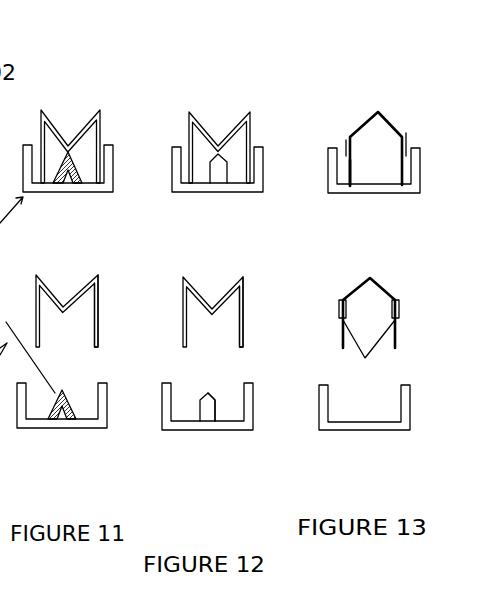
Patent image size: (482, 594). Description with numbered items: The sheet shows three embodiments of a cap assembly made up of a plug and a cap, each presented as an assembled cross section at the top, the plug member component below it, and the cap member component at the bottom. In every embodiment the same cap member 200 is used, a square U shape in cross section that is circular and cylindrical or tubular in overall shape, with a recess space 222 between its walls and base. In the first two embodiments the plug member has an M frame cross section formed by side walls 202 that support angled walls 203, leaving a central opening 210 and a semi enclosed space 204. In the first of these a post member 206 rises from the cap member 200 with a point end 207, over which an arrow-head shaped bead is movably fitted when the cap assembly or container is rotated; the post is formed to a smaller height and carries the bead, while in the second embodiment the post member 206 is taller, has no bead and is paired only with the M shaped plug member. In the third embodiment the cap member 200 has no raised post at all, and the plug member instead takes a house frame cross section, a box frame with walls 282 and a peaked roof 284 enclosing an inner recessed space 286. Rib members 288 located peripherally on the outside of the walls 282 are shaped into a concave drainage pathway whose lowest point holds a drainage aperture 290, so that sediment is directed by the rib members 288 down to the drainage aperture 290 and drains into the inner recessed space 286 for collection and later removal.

In FIG. 11, the cap member 200 is at (0, 108).
In FIG. 12, the cap member 200 is at (212, 288).
In FIG. 13, the cap member 200 is at (315, 412).
In FIG. 12, the side walls 202 is at (245, 300).
In FIG. 11, the angled walls 203 is at (55, 287).
In FIG. 12, the angled walls 203 is at (197, 280).
In FIG. 11, the semi enclosed space 204 is at (88, 148).
In FIG. 12, the semi enclosed space 204 is at (202, 147).
In FIG. 12, the post member 206 is at (215, 172).
In FIG. 12, the point end 207 is at (215, 396).
In FIG. 11, the central opening 210 is at (97, 277).
In FIG. 11, the recess space 222 is at (87, 411).
In FIG. 13, the walls 282 is at (348, 180).
In FIG. 13, the peaked roof 284 is at (367, 123).
In FIG. 13, the inner recessed space 286 is at (368, 307).
In FIG. 13, the rib members 288 is at (338, 310).
In FIG. 13, the drainage aperture 290 is at (370, 356).